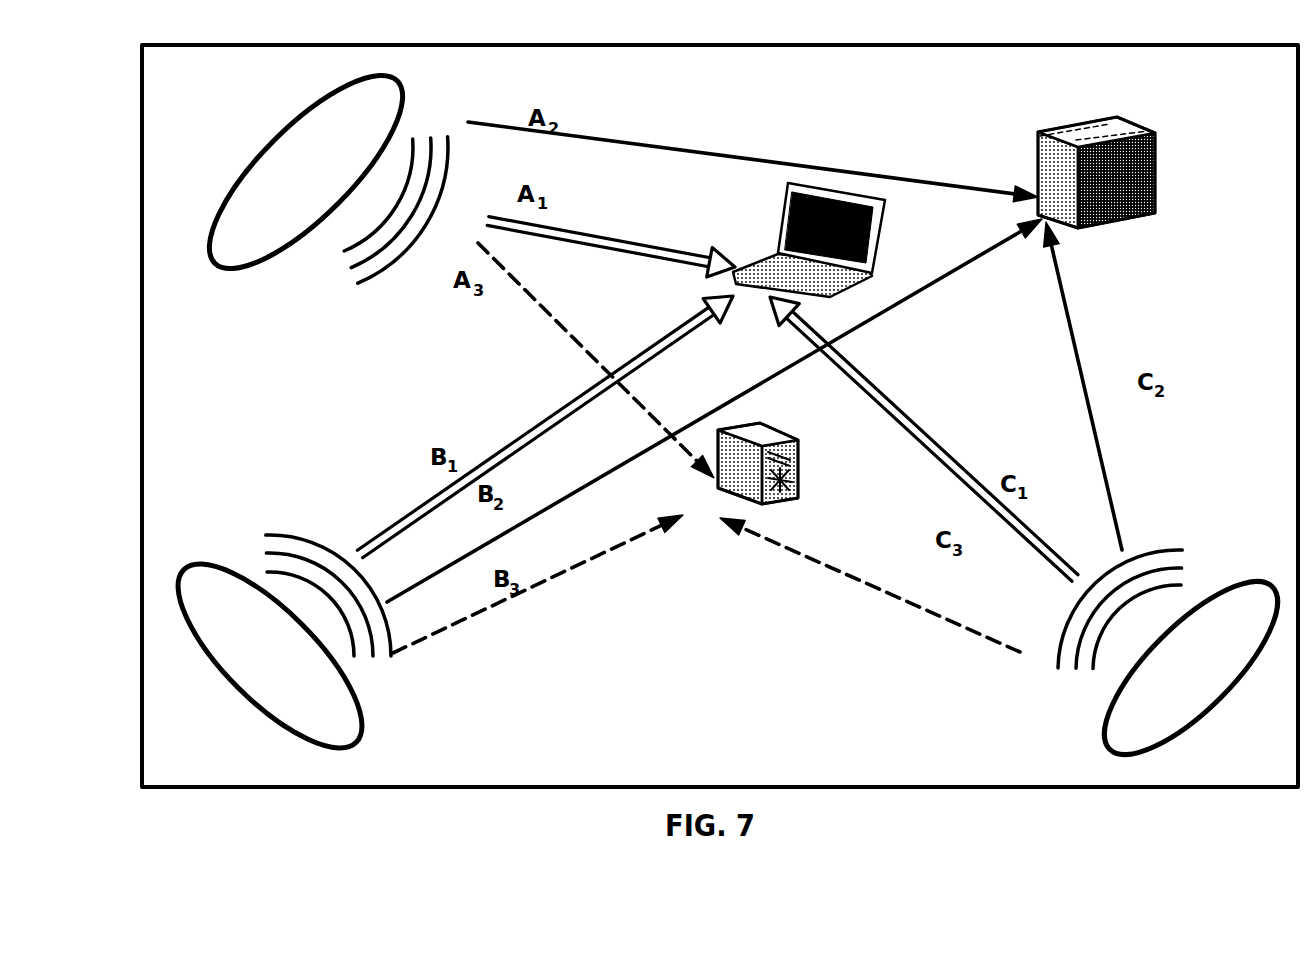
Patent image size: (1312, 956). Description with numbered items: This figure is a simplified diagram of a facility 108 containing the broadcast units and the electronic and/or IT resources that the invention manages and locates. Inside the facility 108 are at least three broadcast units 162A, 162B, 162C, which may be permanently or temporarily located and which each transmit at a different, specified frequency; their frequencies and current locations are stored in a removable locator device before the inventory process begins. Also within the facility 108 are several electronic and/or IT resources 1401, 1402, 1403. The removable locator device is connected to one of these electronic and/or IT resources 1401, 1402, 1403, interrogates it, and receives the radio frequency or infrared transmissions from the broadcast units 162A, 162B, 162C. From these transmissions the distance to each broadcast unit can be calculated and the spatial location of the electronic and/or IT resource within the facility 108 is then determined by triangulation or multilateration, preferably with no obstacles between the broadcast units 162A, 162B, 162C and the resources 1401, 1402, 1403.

The facility 108 is at (428, 788).
The broadcast unit 162A is at (322, 105).
The broadcast unit 162B is at (236, 567).
The broadcast unit 162C is at (1110, 750).
The electronic and/or IT resource 1401 is at (887, 237).
The electronic and/or IT resource 1402 is at (1155, 200).
The electronic and/or IT resource 1403 is at (800, 463).